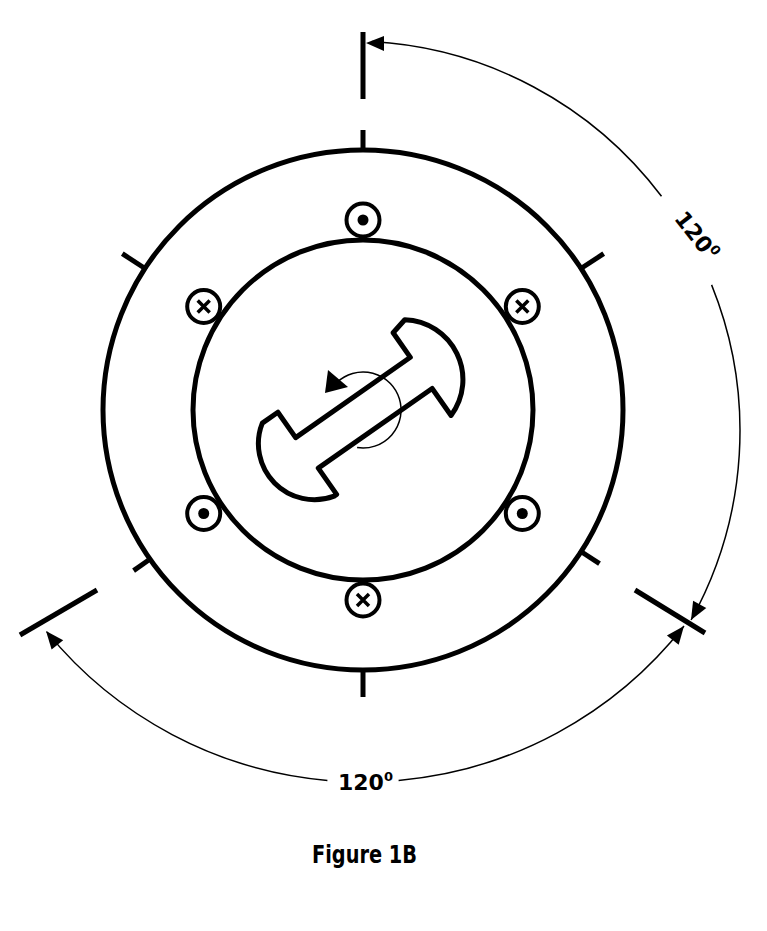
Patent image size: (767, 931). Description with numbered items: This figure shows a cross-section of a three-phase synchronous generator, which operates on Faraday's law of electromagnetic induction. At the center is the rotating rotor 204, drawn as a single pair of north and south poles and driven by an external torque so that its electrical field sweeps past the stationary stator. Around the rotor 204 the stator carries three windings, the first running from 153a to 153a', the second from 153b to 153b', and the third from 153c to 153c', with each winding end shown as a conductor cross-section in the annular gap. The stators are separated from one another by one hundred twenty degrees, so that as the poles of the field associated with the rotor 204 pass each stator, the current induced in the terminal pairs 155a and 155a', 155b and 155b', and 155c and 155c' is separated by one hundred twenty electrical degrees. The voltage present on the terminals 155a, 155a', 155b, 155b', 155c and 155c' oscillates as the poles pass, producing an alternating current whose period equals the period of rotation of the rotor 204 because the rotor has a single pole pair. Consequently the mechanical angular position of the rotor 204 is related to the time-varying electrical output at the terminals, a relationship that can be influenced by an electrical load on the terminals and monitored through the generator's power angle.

The terminal 155a is at (383, 92).
The terminal 155a' is at (388, 685).
The terminal 155b is at (642, 592).
The terminal 155b' is at (112, 270).
The terminal 155c is at (84, 597).
The terminal 155c' is at (607, 256).
The winding 153a is at (336, 210).
The winding 153a' is at (333, 600).
The winding 153b is at (530, 536).
The winding 153b' is at (184, 326).
The winding 153c is at (182, 499).
The winding 153c' is at (502, 289).
The rotor 204 is at (335, 497).